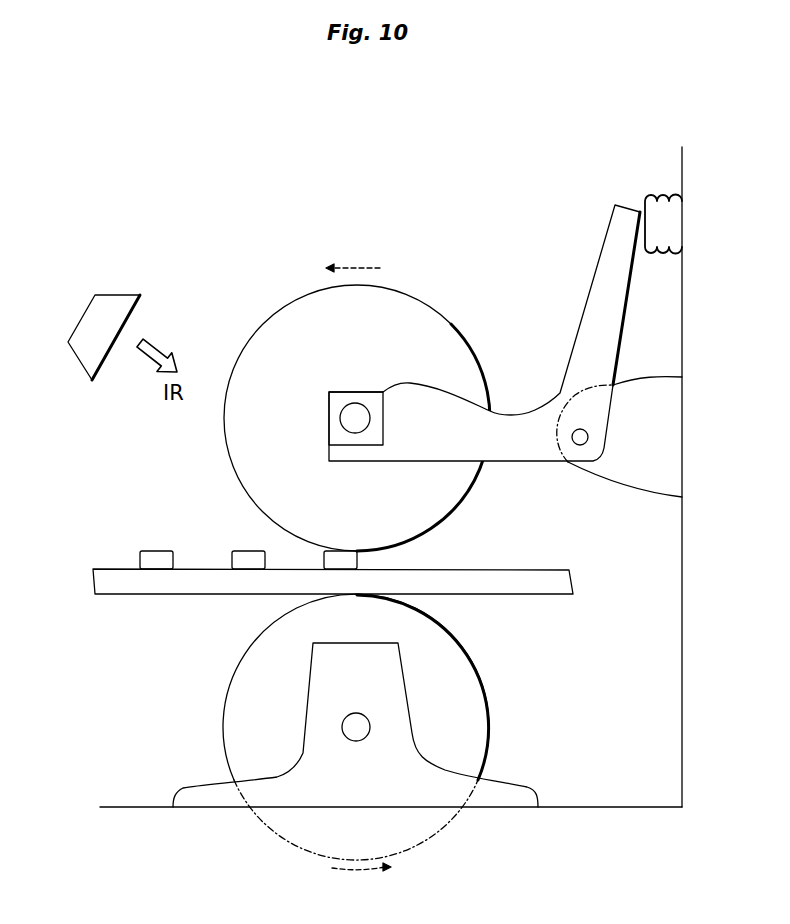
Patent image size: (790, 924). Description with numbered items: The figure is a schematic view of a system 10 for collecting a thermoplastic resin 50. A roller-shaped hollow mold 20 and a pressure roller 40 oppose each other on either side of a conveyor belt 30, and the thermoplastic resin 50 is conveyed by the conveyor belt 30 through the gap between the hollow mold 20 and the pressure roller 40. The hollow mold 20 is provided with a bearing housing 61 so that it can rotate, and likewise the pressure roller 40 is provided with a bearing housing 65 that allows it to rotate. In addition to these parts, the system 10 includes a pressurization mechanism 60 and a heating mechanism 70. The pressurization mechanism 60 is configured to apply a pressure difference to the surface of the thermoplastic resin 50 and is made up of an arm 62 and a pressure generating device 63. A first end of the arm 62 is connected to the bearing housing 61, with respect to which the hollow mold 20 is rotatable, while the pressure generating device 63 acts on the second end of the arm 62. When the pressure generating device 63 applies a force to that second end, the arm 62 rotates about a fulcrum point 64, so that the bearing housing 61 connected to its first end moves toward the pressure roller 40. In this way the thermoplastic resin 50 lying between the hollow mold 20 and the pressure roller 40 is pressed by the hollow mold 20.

The system 10 is at (252, 118).
The hollow mold 20 is at (405, 317).
The conveyor belt 30 is at (92, 582).
The pressure roller 40 is at (463, 715).
The thermoplastic resin 50 is at (150, 548).
The pressurization mechanism 60 is at (527, 204).
The bearing housing 61 is at (345, 392).
The arm 62 is at (587, 343).
The pressure generating device 63 is at (648, 206).
The fulcrum point 64 is at (578, 445).
The bearing housing 65 is at (318, 717).
The heating mechanism 70 is at (97, 294).